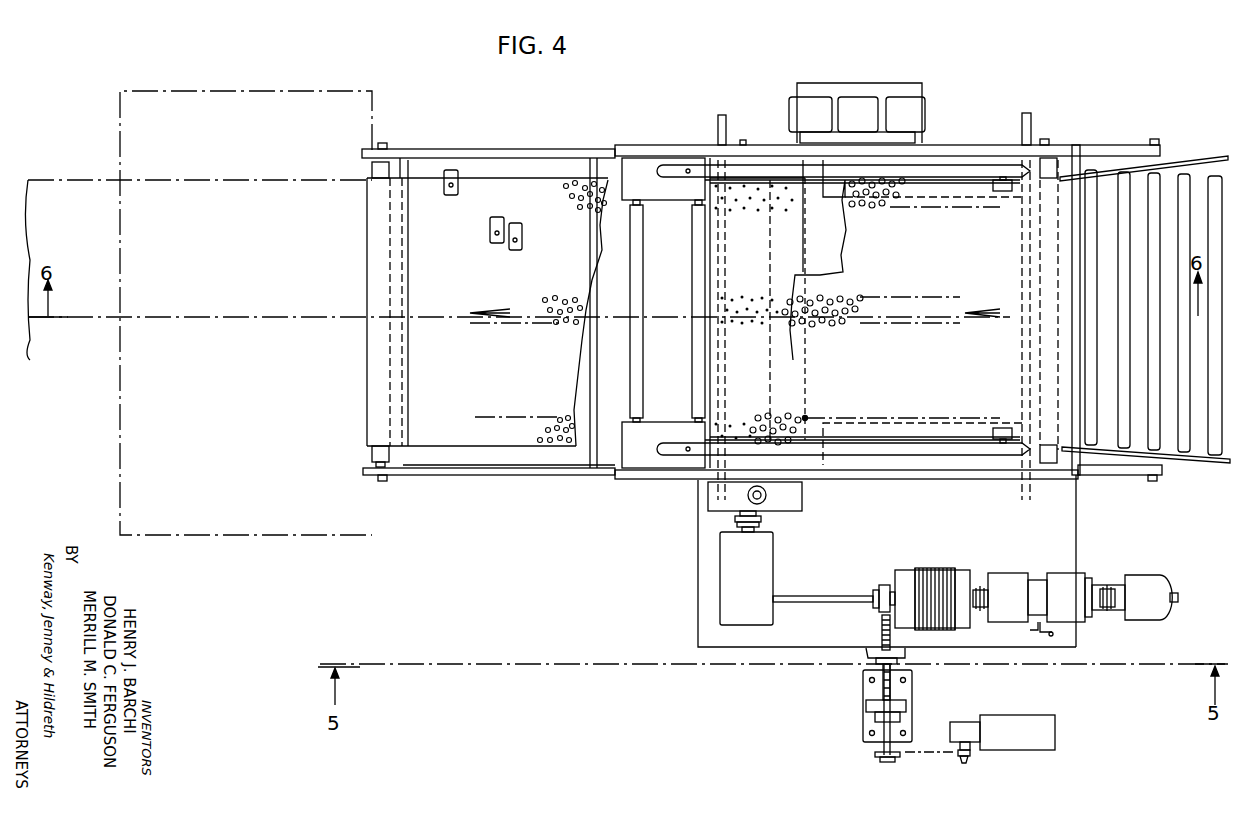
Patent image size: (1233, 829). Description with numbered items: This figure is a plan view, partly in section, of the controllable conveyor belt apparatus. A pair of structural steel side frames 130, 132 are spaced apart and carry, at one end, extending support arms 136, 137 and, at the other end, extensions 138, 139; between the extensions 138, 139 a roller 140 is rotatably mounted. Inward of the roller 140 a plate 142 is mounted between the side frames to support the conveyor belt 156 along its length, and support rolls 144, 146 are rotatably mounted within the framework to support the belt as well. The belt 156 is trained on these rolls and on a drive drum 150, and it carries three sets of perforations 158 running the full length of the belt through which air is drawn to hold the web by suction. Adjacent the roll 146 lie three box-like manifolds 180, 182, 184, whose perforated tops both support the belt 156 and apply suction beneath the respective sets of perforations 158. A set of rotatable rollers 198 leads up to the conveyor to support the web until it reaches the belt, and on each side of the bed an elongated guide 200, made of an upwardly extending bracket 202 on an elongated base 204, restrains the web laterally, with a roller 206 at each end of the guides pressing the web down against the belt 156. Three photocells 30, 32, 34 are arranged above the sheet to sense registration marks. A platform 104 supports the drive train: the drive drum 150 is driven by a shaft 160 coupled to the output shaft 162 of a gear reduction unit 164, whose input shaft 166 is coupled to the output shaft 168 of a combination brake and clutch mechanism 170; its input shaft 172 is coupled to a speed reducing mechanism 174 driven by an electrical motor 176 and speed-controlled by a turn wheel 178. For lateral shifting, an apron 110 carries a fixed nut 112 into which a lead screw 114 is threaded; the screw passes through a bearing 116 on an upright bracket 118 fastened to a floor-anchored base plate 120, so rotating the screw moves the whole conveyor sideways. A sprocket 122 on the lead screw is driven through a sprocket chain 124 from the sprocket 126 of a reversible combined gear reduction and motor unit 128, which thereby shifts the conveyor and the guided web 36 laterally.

The photocell 30 is at (458, 180).
The photocell 32 is at (490, 232).
The photocell 34 is at (522, 238).
The delivery table 36 is at (292, 540).
The platform 104 is at (862, 544).
The apron 110 is at (866, 654).
The fixed nut 112 is at (897, 660).
The lead screw 114 is at (880, 692).
The bearing 116 is at (876, 720).
The upright bracket 118 is at (866, 708).
The base plate 120 is at (860, 732).
The sprocket 122 is at (884, 762).
The sprocket chain 124 is at (912, 758).
The sprocket 126 is at (972, 760).
The combined gear reduction and motor unit 128 is at (1034, 746).
The side frame 130 is at (774, 146).
The side frame 132 is at (838, 480).
The support arm 136 is at (1124, 148).
The support arm 137 is at (1128, 478).
The extension 138 is at (558, 150).
The extension 139 is at (466, 478).
The roller 140 is at (370, 177).
The plate 142 is at (538, 478).
The support roll 144 is at (640, 224).
The support roll 146 is at (692, 258).
The drive drum 150 is at (778, 398).
The conveyor belt 156 is at (486, 376).
The perforations 158 is at (562, 183).
The shaft 160 is at (740, 508).
The output shaft 162 is at (735, 522).
The gear reduction unit 164 is at (764, 574).
The input shaft 166 is at (834, 598).
The output shaft 168 is at (890, 588).
The combination brake and clutch mechanism 170 is at (942, 568).
The input shaft 172 is at (980, 588).
The speed reducing mechanism 174 is at (1010, 576).
The electrical motor 176 is at (1150, 614).
The turn wheel 178 is at (1050, 634).
The manifold 180 is at (803, 235).
The manifold 182 is at (800, 291).
The manifold 184 is at (806, 385).
The rotatable rollers 198 is at (1155, 206).
The guide 200 is at (935, 165).
The bracket 202 is at (950, 178).
The base 204 is at (962, 178).
The roller 206 is at (993, 187).